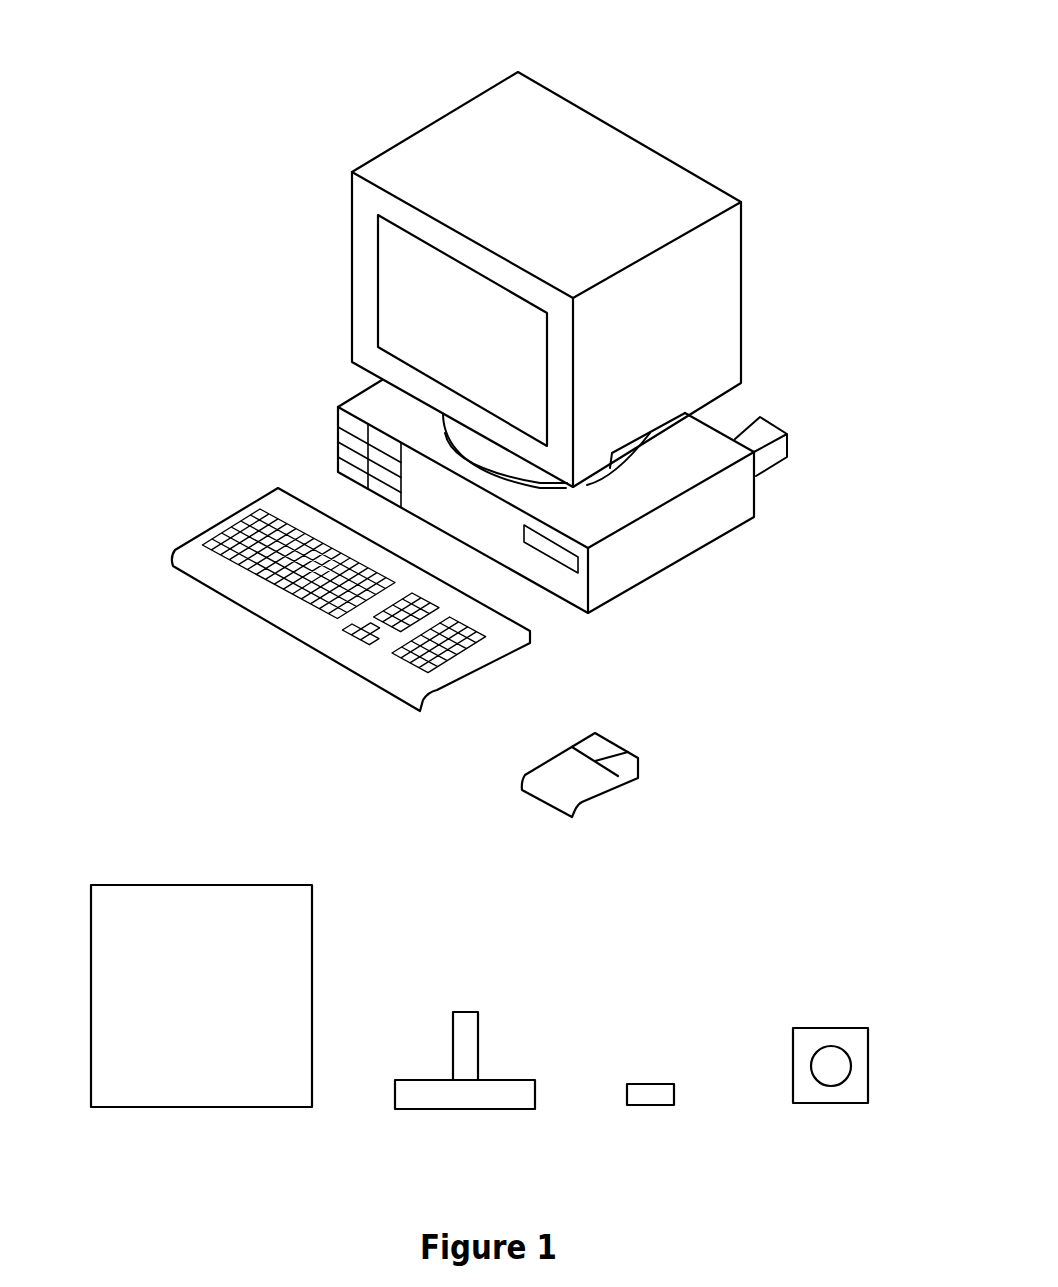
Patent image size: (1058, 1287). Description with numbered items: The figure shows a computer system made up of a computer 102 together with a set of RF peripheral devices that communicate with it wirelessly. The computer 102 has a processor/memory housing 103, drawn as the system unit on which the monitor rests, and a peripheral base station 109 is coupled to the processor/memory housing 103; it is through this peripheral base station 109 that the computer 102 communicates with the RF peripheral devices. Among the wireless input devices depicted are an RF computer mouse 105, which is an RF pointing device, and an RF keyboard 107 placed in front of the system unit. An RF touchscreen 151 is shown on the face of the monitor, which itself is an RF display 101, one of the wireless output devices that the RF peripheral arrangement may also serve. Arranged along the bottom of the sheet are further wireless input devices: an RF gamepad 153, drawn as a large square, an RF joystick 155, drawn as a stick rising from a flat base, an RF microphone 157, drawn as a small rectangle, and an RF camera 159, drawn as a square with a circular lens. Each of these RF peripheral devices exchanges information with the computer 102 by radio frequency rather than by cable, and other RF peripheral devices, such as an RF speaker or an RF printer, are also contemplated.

The RF display 101 is at (478, 257).
The RF touchscreen 151 is at (388, 258).
The computer 102 is at (624, 475).
The processor/memory housing 103 is at (703, 443).
The peripheral base station 109 is at (770, 454).
The RF keyboard 107 is at (327, 633).
The RF computer mouse 105 is at (615, 765).
The RF gamepad 153 is at (201, 996).
The RF joystick 155 is at (502, 1093).
The RF microphone 157 is at (662, 1093).
The RF camera 159 is at (850, 1042).